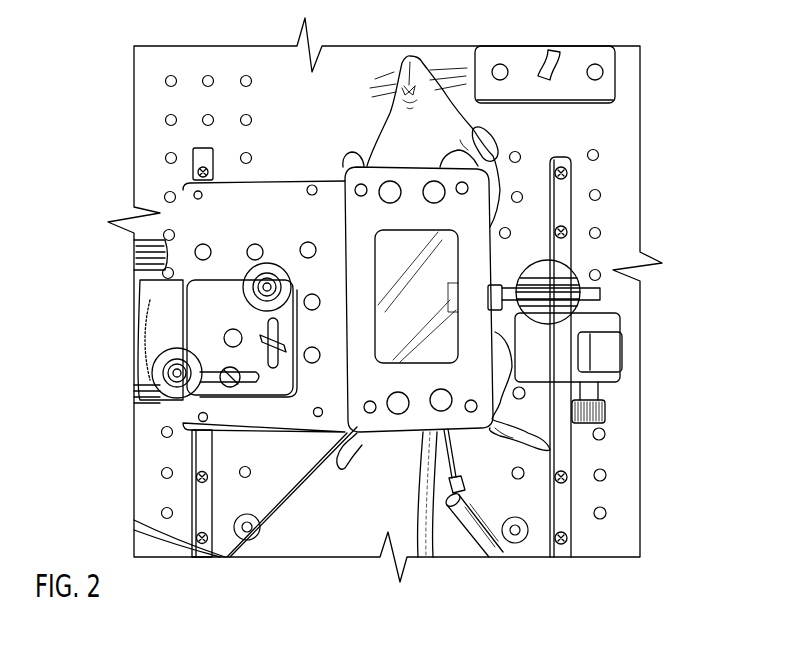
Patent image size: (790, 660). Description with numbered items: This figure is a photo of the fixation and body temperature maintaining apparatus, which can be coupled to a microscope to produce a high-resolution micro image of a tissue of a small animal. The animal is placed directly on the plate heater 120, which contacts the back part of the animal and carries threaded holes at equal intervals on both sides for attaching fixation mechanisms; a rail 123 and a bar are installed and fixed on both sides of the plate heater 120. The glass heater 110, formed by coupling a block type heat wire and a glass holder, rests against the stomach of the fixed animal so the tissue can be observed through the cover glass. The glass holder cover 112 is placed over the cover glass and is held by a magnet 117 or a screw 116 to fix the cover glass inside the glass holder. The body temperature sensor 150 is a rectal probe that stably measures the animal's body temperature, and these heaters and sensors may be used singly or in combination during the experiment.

The glass heater 110 is at (203, 231).
The glass holder cover 112 is at (473, 368).
The screw 116 is at (369, 415).
The magnet 117 is at (397, 415).
The plate heater 120 is at (172, 140).
The rail 123 is at (567, 452).
The body temperature sensor 150 is at (490, 525).